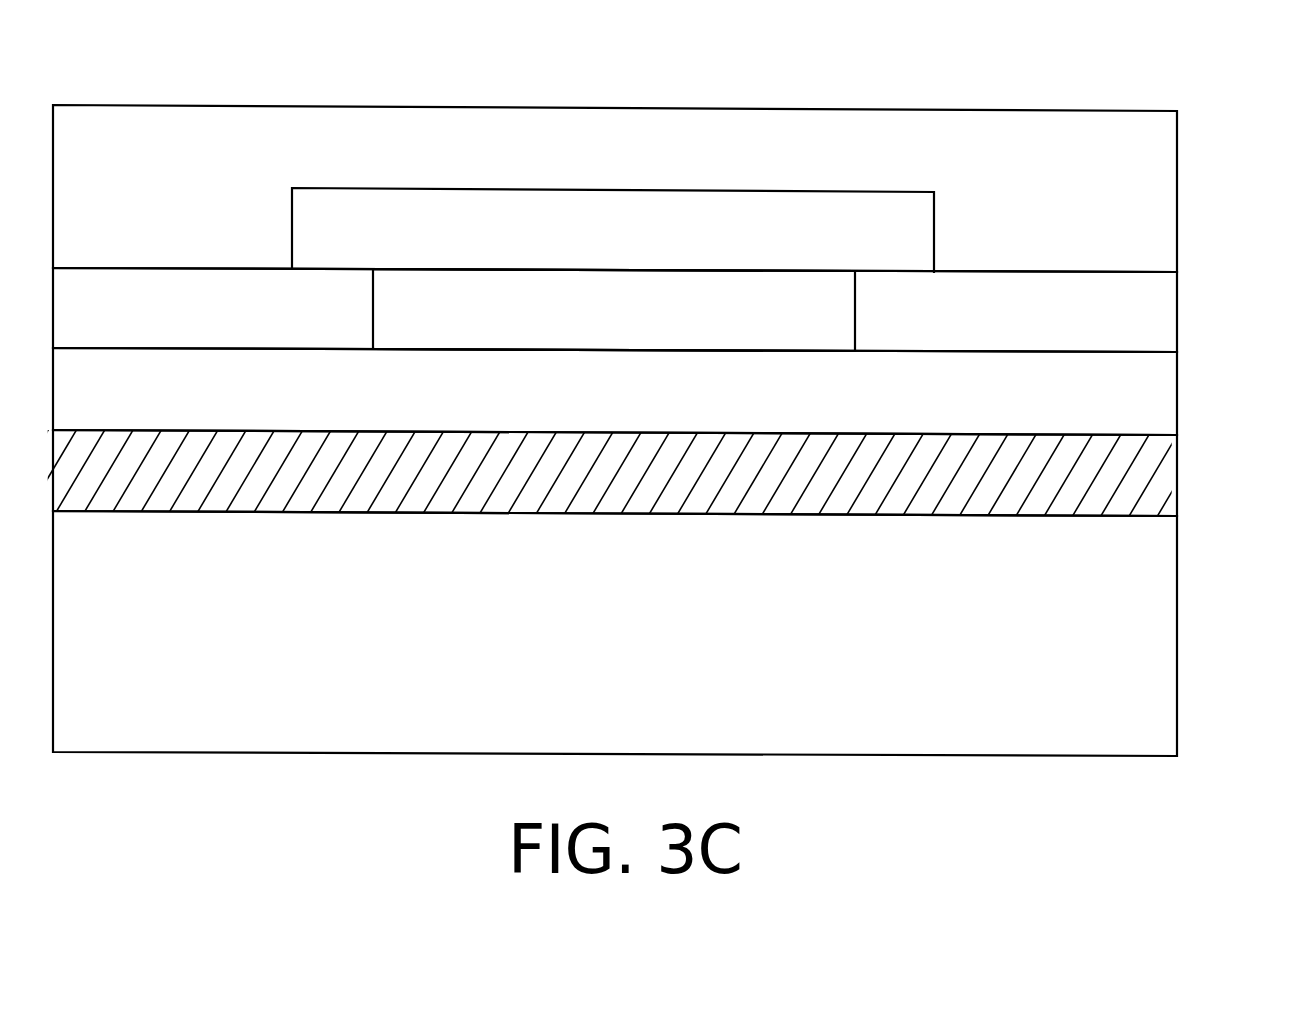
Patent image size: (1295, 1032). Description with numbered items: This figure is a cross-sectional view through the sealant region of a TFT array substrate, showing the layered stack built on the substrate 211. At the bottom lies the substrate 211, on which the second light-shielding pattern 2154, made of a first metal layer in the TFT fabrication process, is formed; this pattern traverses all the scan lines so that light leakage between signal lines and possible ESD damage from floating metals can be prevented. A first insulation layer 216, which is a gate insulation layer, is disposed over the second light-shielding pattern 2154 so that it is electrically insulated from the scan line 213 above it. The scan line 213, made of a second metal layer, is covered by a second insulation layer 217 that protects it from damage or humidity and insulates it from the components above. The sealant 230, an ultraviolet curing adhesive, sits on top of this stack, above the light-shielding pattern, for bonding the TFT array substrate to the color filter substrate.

The substrate 211 is at (1153, 617).
The second light-shielding pattern 2154 is at (1153, 493).
The first insulation layer 216 is at (1153, 403).
The second insulation layer 217 is at (1153, 315).
The scan line 213 is at (626, 283).
The sealant 230 is at (1153, 217).